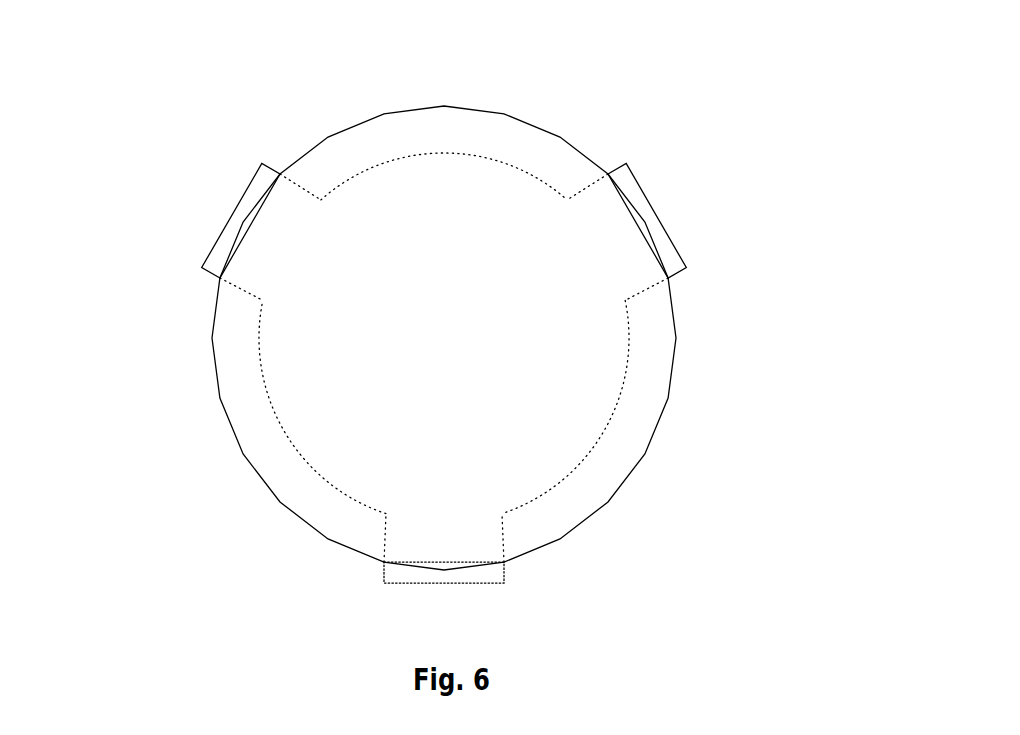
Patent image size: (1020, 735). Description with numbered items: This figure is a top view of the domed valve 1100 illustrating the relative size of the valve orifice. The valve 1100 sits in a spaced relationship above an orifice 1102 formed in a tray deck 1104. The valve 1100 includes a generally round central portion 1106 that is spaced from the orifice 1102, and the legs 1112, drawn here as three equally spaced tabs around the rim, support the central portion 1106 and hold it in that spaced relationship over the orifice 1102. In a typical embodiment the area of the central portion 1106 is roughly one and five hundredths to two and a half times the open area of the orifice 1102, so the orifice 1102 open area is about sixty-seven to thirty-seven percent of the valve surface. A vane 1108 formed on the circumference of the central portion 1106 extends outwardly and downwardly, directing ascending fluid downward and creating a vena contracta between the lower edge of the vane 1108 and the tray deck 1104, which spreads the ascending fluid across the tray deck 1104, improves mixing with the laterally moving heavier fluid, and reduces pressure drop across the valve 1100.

The domed valve 1100 is at (208, 116).
The orifice 1102 is at (380, 173).
The tray deck 1104 is at (567, 166).
The central portion 1106 is at (623, 315).
The vane 1108 is at (617, 463).
The leg 1112 is at (490, 576).